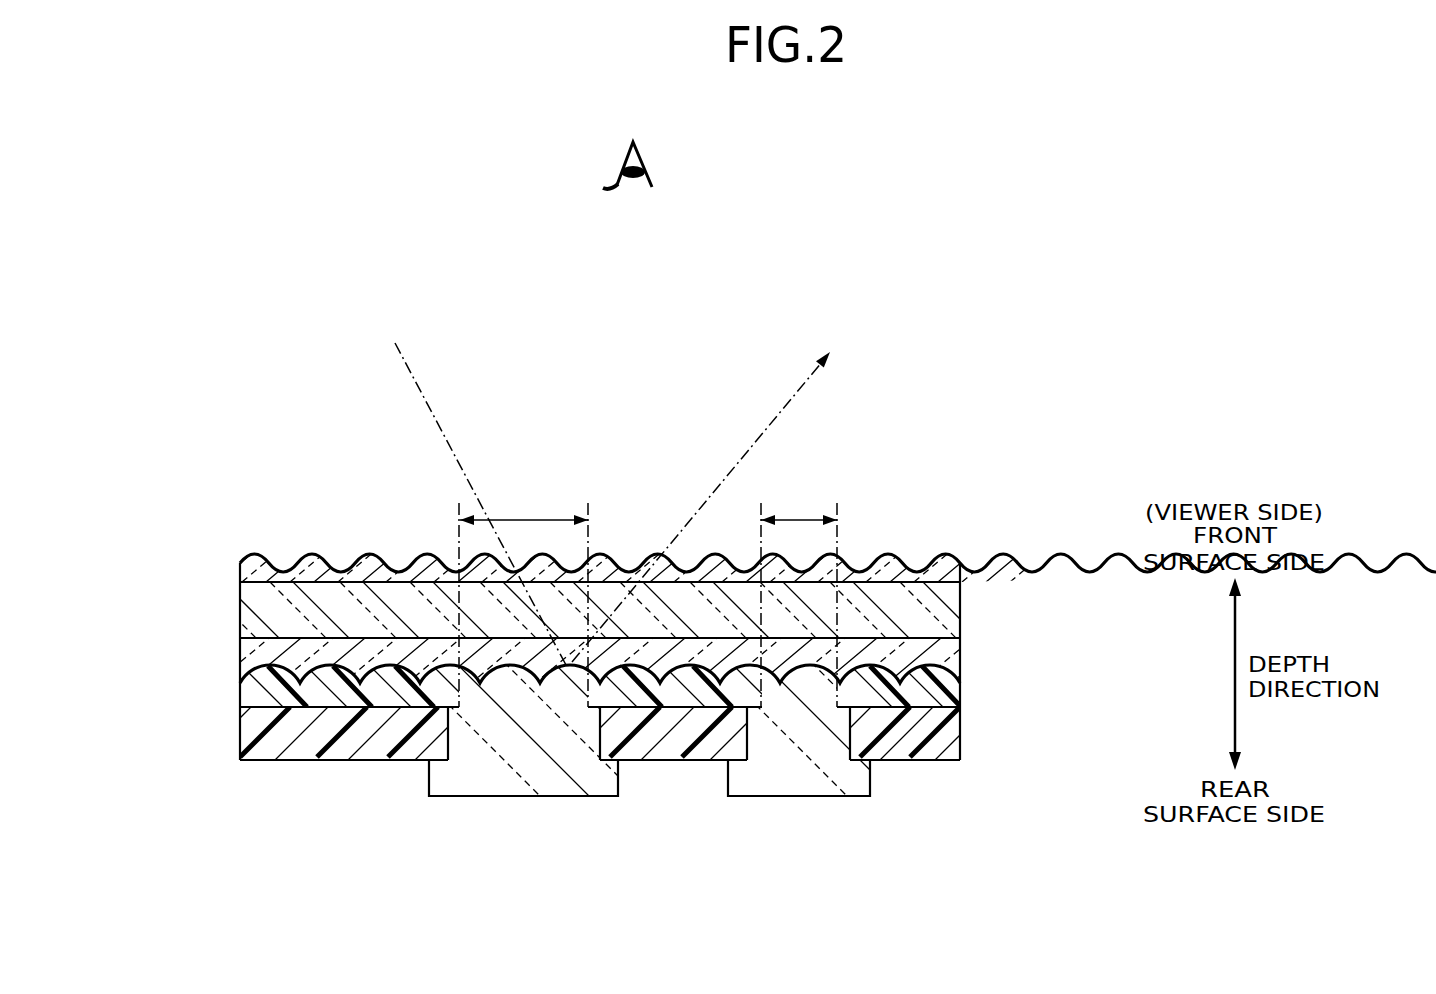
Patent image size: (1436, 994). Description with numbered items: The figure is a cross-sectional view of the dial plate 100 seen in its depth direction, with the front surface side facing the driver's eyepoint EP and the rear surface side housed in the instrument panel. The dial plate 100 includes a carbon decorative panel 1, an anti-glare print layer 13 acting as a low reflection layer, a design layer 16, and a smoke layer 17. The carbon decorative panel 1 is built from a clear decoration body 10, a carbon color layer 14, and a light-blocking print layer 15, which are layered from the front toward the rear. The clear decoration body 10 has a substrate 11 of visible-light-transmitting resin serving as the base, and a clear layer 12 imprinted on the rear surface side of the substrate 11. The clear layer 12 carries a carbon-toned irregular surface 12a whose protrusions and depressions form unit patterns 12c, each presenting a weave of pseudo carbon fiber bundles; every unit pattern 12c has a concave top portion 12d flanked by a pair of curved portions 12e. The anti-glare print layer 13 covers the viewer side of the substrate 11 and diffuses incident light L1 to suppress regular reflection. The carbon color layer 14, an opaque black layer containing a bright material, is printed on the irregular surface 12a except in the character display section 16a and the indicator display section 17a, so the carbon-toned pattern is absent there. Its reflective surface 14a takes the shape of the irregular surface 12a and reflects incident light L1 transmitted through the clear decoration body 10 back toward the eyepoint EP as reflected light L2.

The carbon decorative panel 1 is at (1112, 620).
The clear decoration body 10 is at (1025, 588).
The substrate 11 is at (961, 608).
The clear layer 12 is at (961, 658).
The carbon-toned irregular surface 12a is at (400, 686).
The unit pattern 12c is at (360, 852).
The top portion 12d is at (283, 672).
The curved portions 12e is at (265, 672).
The anti-glare print layer 13 is at (961, 560).
The carbon color layer 14 is at (962, 695).
The reflective surface 14a is at (329, 655).
The light-blocking print layer 15 is at (962, 737).
The design layer 16 is at (522, 798).
The character display section 16a is at (521, 518).
The smoke layer 17 is at (797, 798).
The indicator display section 17a is at (800, 518).
The dial plate 100 is at (947, 418).
The incident light L1 is at (420, 388).
The reflected light L2 is at (785, 408).
The eyepoint EP is at (648, 150).